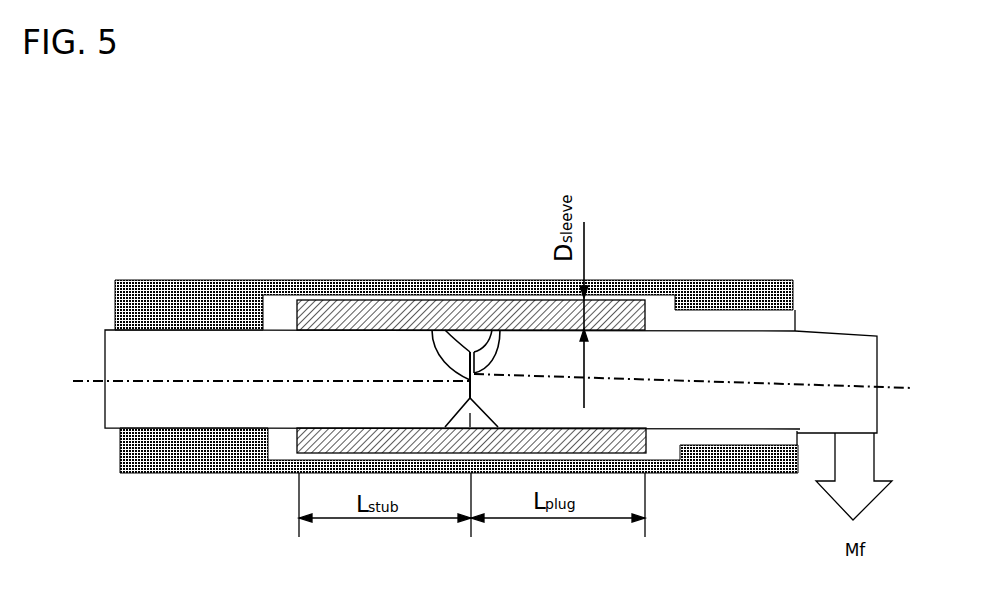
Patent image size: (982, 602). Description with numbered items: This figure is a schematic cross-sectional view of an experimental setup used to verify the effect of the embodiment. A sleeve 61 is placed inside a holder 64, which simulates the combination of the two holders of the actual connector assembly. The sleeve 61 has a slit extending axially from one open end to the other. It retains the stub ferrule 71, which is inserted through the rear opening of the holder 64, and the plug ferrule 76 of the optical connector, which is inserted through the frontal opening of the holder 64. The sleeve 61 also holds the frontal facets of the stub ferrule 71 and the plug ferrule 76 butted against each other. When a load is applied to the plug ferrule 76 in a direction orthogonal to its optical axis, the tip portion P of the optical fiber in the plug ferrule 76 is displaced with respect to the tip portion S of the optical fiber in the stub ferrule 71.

The holder 64 is at (158, 284).
The sleeve 61 is at (331, 307).
The stub ferrule 71 is at (112, 360).
The plug ferrule 76 is at (812, 348).
The tip portion of the optical fiber in the stub ferrule S is at (432, 330).
The tip portion of the optical fiber in the plug ferrule P is at (497, 330).